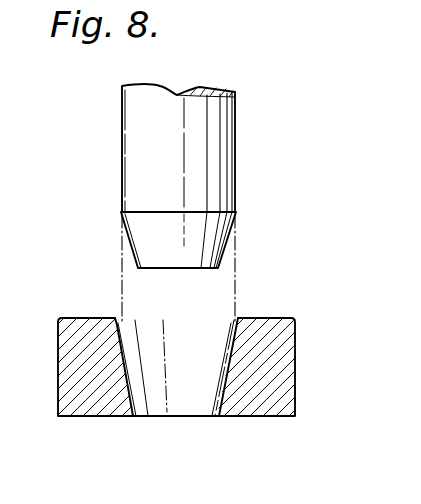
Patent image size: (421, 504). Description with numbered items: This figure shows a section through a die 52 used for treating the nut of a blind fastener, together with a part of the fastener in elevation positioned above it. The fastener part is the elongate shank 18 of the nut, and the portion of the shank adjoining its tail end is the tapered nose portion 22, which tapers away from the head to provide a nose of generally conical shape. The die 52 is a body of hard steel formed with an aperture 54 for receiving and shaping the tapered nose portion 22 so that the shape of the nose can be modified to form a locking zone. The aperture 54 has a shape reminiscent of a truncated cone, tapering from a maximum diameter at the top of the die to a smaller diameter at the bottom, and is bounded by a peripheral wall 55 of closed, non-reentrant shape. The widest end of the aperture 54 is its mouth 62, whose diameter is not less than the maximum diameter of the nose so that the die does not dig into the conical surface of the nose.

The shank 18 is at (235, 147).
The tapered nose portion 22 is at (222, 252).
The die 52 is at (295, 337).
The mouth 62 is at (121, 320).
The peripheral wall 55 is at (136, 395).
The aperture 54 is at (191, 407).